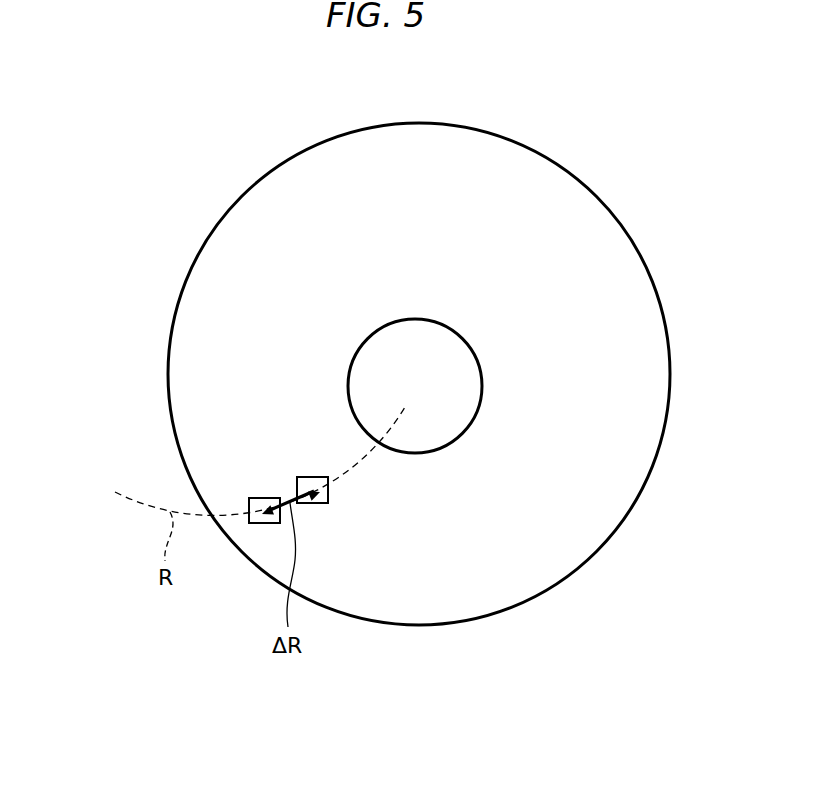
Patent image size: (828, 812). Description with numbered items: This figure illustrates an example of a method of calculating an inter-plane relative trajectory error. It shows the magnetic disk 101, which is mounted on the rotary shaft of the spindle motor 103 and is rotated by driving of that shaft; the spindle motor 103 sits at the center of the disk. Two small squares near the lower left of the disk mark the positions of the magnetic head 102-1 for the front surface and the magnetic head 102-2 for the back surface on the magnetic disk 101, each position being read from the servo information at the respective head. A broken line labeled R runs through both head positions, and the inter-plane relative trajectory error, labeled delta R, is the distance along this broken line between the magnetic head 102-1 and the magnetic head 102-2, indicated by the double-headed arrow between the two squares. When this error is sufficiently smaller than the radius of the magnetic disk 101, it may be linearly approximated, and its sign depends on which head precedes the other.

The magnetic disk 101 is at (585, 182).
The magnetic head for the front surface 102-1 is at (312, 477).
The magnetic head for the back surface 102-2 is at (265, 498).
The spindle motor 103 is at (436, 345).